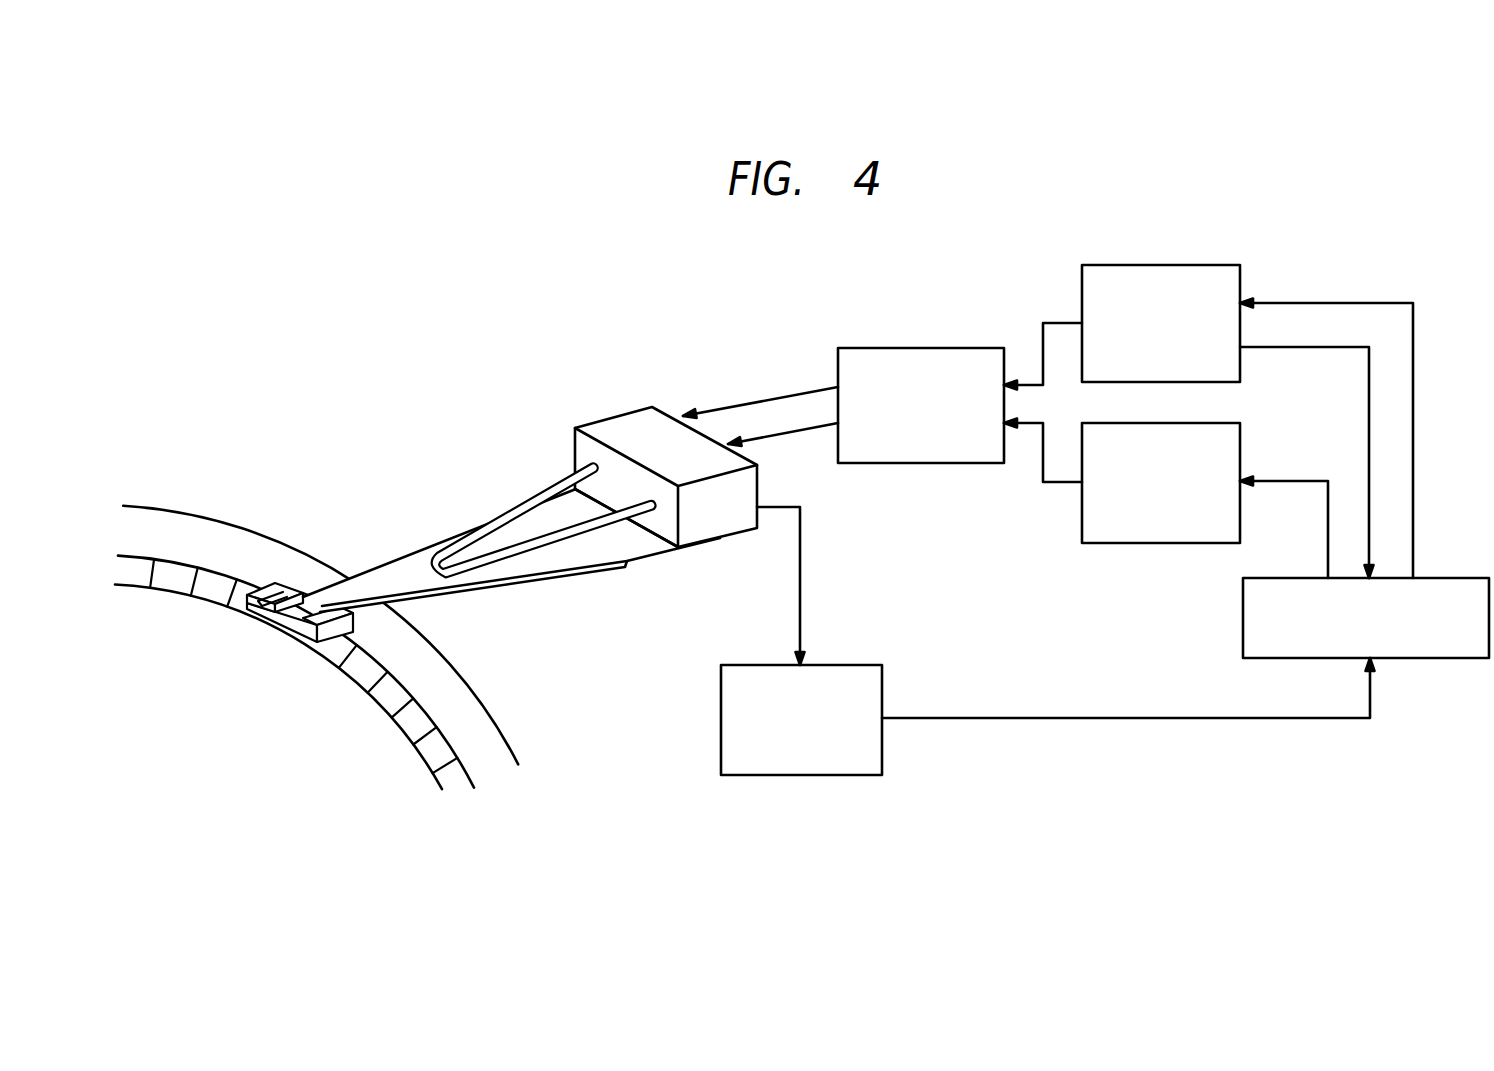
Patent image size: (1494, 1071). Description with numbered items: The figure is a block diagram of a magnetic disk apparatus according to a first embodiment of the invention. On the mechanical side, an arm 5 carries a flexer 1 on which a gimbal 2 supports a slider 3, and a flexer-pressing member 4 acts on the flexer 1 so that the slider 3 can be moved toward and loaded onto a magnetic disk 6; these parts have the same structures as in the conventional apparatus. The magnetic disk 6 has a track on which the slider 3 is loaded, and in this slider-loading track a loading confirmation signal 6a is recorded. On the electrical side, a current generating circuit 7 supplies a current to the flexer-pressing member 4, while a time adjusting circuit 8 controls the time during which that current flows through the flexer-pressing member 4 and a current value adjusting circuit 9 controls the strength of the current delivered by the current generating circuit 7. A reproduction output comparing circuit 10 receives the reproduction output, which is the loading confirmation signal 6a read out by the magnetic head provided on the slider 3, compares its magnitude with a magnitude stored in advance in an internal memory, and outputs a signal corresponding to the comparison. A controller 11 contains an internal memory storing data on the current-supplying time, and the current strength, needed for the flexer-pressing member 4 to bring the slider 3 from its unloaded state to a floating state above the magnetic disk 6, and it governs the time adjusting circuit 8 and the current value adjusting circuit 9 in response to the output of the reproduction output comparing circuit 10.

The flexer 1 is at (569, 553).
The gimbal 2 is at (272, 616).
The slider 3 is at (283, 587).
The flexer-pressing member 4 is at (512, 504).
The arm 5 is at (636, 418).
The magnetic disk 6 is at (485, 732).
The loading confirmation signal 6a is at (385, 688).
The current generating circuit 7 is at (976, 347).
The time adjusting circuit 8 is at (1218, 265).
The current value adjusting circuit 9 is at (1228, 422).
The reproduction output comparing circuit 10 is at (848, 664).
The controller 11 is at (1459, 577).